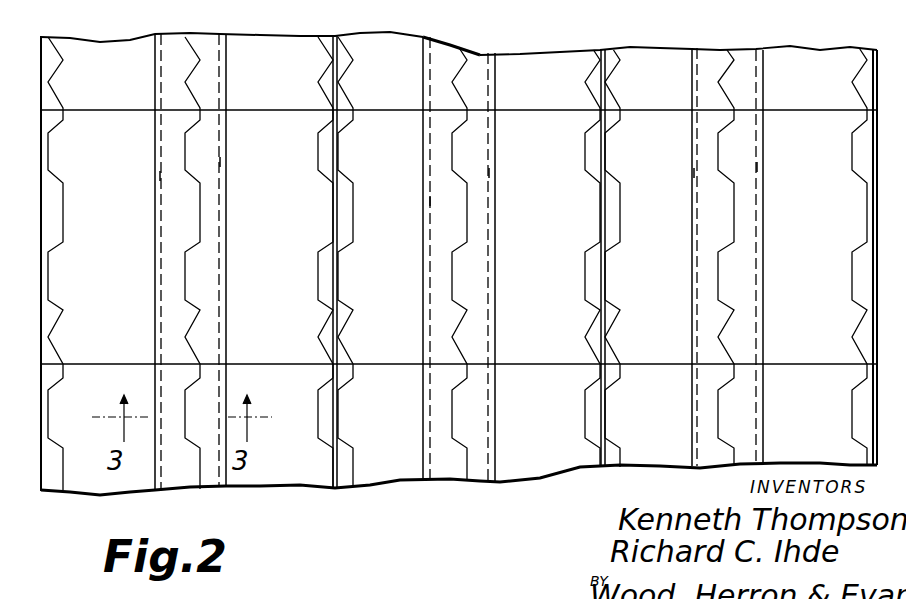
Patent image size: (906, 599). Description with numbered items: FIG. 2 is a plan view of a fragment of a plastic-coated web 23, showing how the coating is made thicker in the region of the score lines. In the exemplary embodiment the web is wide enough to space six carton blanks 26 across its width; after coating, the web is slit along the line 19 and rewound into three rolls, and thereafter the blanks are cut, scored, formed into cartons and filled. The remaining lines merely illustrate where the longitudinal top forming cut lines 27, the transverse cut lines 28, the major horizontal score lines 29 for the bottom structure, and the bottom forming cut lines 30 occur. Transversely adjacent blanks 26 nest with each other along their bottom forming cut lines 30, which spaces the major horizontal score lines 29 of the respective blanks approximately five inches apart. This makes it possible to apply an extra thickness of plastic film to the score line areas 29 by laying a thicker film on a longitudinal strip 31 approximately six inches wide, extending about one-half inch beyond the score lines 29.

The slit line 19 is at (334, 36).
The corrugated sheet assembly 23 is at (553, 34).
The carton blank 26 is at (112, 138).
The longitudinal top forming cut line 27 is at (64, 211).
The transverse cut line 28 is at (374, 110).
The major horizontal score line 29 is at (157, 176).
The bottom forming cut line 30 is at (201, 218).
The longitudinal strip 31 is at (228, 282).